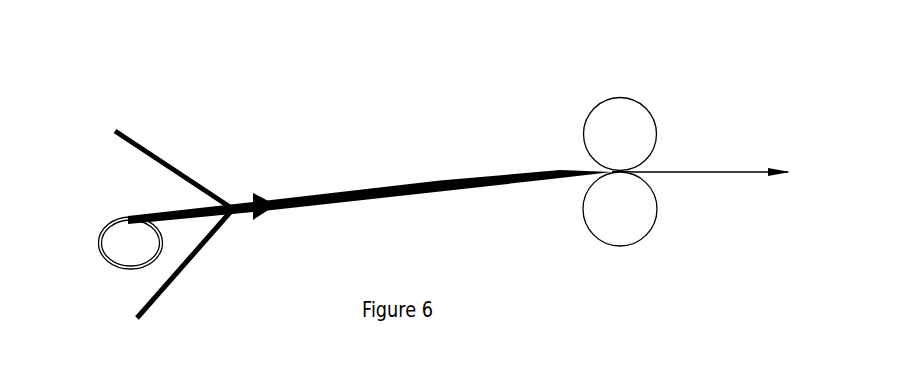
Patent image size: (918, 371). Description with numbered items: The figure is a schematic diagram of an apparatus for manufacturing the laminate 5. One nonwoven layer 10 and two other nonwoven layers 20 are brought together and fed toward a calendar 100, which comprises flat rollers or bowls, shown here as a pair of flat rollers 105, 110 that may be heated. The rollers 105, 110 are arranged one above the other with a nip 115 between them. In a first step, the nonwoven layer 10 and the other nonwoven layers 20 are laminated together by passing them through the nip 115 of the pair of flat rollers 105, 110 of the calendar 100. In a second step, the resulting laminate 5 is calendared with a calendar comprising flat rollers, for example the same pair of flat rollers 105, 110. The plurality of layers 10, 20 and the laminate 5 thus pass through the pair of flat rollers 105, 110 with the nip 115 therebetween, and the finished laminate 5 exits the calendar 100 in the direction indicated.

The laminate 5 is at (713, 174).
The nonwoven layer 10 is at (113, 222).
The other nonwoven layers 20 is at (108, 131).
The calendar 100 is at (634, 154).
The flat roller 105 is at (631, 145).
The flat roller 110 is at (631, 225).
The nip 115 is at (631, 172).